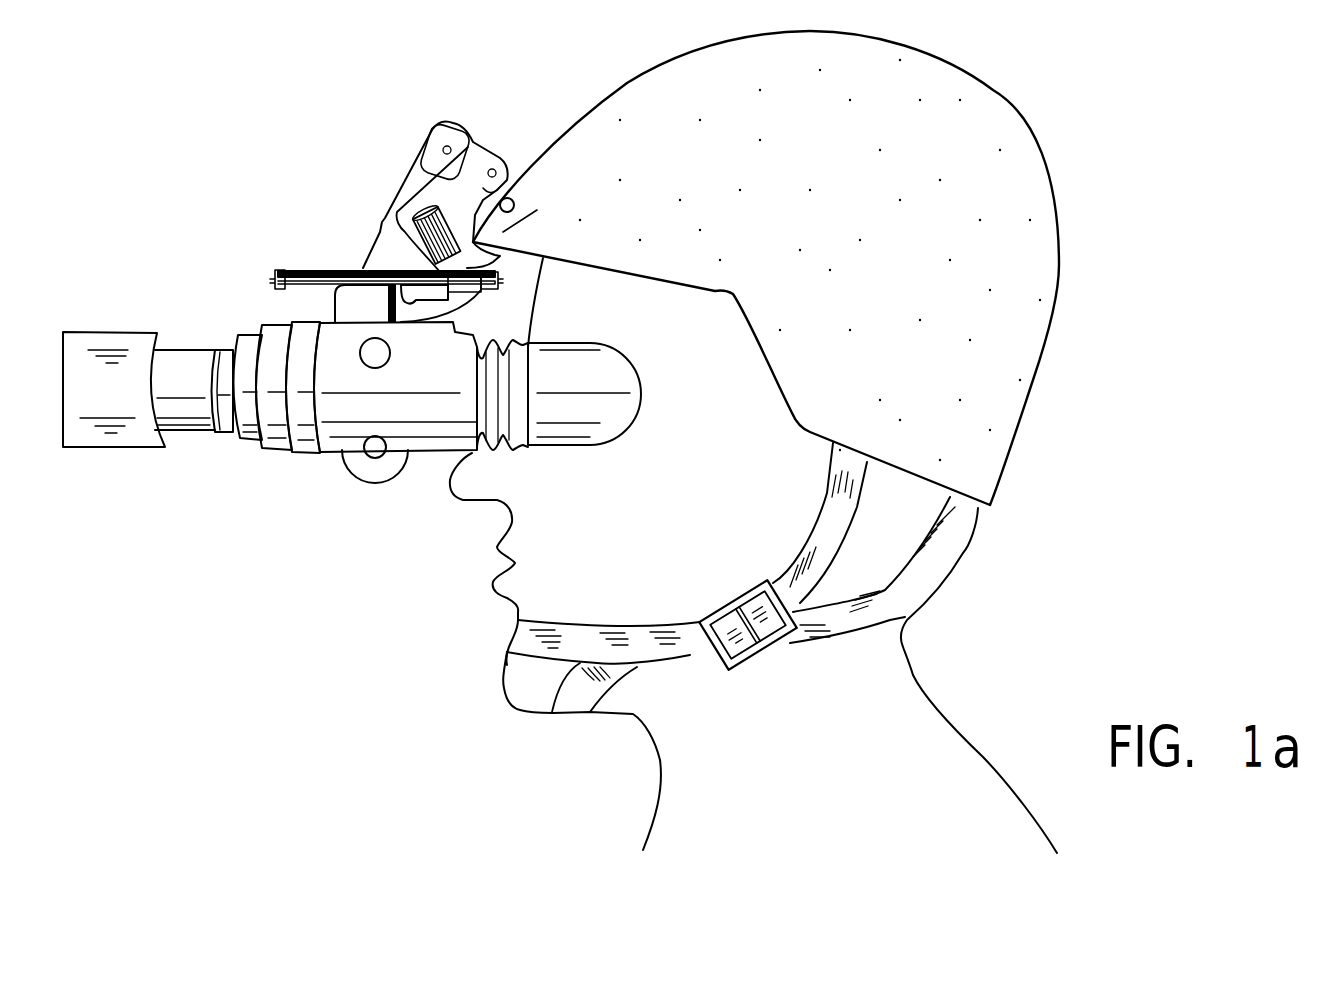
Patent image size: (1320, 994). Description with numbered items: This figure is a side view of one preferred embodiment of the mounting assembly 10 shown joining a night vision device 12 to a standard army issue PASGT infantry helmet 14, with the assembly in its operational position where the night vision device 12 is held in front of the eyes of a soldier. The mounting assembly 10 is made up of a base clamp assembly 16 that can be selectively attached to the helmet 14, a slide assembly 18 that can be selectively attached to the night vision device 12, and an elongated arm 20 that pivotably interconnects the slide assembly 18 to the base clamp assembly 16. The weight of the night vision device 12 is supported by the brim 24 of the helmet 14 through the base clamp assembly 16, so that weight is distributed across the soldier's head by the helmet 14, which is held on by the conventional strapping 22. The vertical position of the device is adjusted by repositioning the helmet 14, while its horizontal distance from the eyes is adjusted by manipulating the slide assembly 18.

The mounting assembly 10 is at (450, 98).
The night vision device 12 is at (340, 420).
The helmet 14 is at (978, 110).
The base clamp assembly 16 is at (420, 198).
The slide assembly 18 is at (303, 268).
The elongated arm 20 is at (365, 265).
The strapping 22 is at (575, 683).
The brim 24 is at (527, 207).